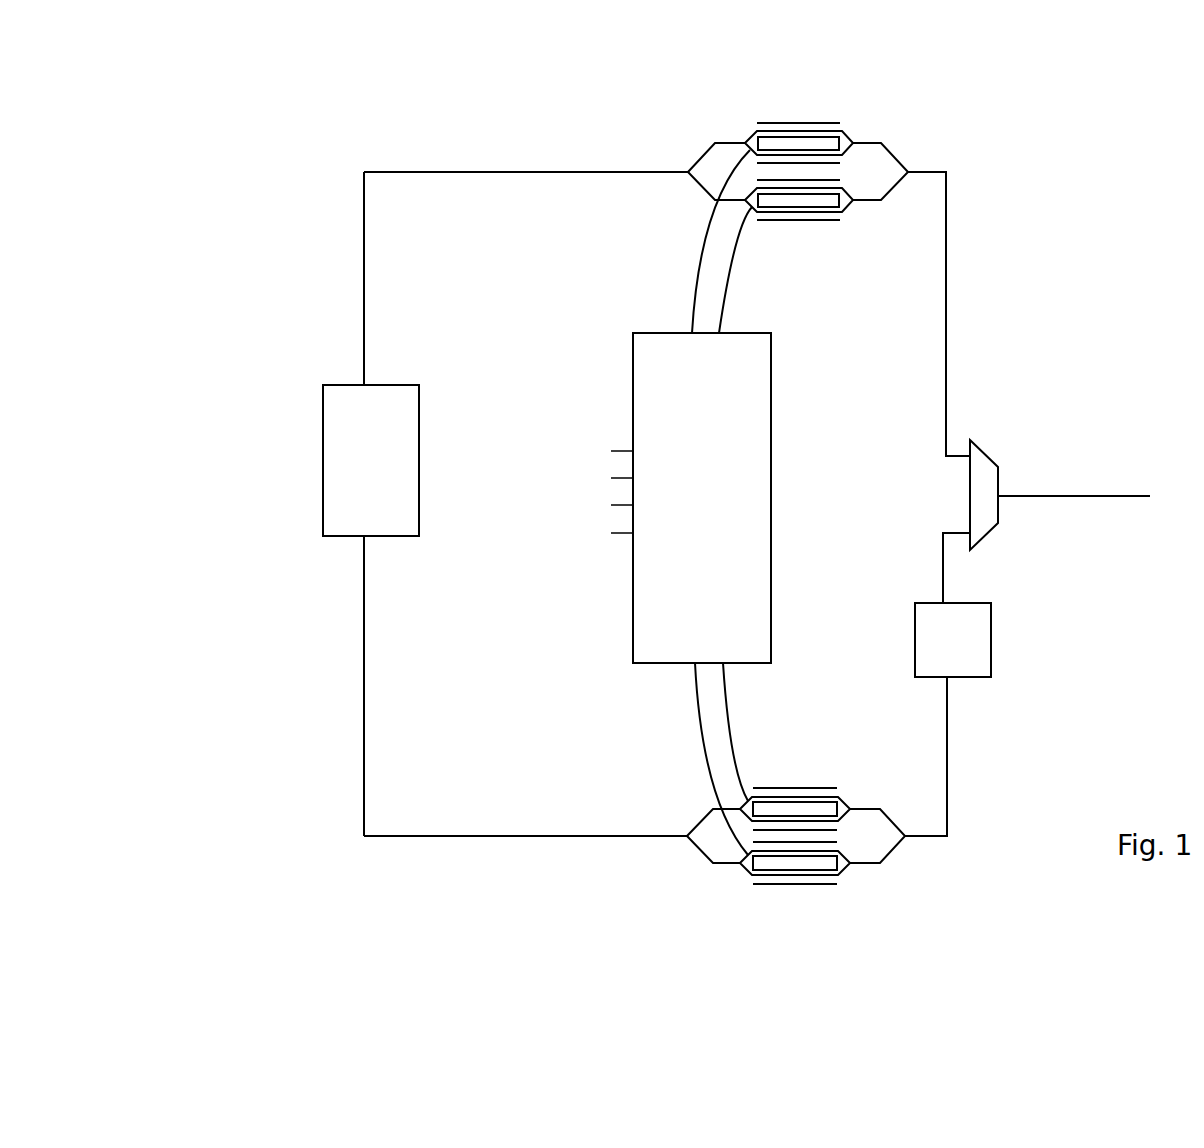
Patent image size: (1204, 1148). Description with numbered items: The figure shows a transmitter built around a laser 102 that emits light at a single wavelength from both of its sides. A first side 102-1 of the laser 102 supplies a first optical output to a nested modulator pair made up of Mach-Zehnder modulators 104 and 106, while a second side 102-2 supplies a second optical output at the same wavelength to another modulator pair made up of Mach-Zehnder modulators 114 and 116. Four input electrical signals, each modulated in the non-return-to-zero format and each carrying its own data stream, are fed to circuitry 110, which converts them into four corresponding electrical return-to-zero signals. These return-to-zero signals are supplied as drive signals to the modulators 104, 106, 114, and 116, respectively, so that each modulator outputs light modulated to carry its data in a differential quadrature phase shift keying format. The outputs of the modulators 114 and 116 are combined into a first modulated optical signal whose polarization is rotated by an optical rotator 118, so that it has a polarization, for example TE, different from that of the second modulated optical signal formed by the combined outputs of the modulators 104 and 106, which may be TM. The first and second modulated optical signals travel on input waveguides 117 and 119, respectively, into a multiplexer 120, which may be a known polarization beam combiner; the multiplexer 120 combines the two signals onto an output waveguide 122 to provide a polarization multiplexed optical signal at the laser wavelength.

The laser 102 is at (275, 363).
The first side of laser 102-1 is at (400, 385).
The second side of laser 102-2 is at (343, 537).
The Mach-Zehnder modulator 104 is at (838, 123).
The Mach-Zehnder modulator 106 is at (838, 220).
The circuitry 110 is at (771, 420).
The Mach-Zehnder modulator 114 is at (850, 808).
The Mach-Zehnder modulator 116 is at (853, 867).
The input waveguide 117 is at (946, 413).
The optical rotator 118 is at (991, 647).
The input waveguide 119 is at (940, 548).
The multiplexer 120 is at (998, 467).
The output waveguide 122 is at (1075, 496).